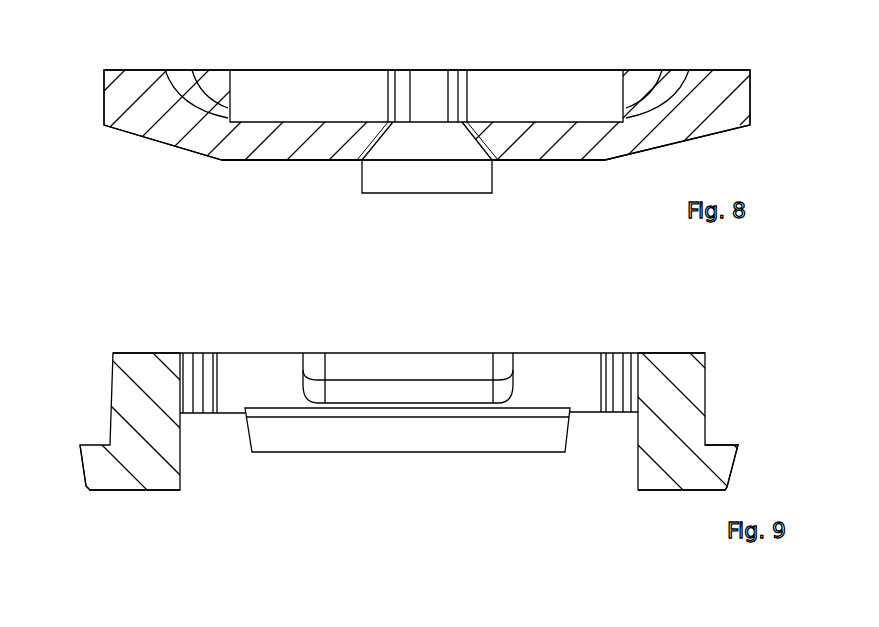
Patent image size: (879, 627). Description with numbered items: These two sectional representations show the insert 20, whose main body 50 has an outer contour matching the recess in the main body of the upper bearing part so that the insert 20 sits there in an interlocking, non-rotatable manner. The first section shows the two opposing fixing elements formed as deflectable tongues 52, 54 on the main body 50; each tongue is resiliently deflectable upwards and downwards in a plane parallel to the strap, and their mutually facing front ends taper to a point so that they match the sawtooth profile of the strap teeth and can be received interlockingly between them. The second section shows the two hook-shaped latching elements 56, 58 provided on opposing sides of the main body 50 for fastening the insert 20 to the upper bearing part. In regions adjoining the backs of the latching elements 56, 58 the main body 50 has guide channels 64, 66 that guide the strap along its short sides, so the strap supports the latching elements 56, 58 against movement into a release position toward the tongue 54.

In FIG. 8, the insert 20 is at (82, 82).
In FIG. 9, the insert 20 is at (96, 291).
In FIG. 8, the main body 50 is at (745, 35).
In FIG. 9, the main body 50 is at (675, 377).
In FIG. 8, the tongue 52 is at (283, 150).
In FIG. 8, the tongue 54 is at (568, 150).
In FIG. 9, the tongue 54 is at (392, 430).
In FIG. 8, the latching element 56 is at (422, 170).
In FIG. 9, the latching element 56 is at (123, 473).
In FIG. 9, the latching element 58 is at (663, 468).
In FIG. 8, the guide channel 64 is at (433, 92).
In FIG. 9, the guide channel 64 is at (195, 373).
In FIG. 9, the guide channel 66 is at (613, 352).